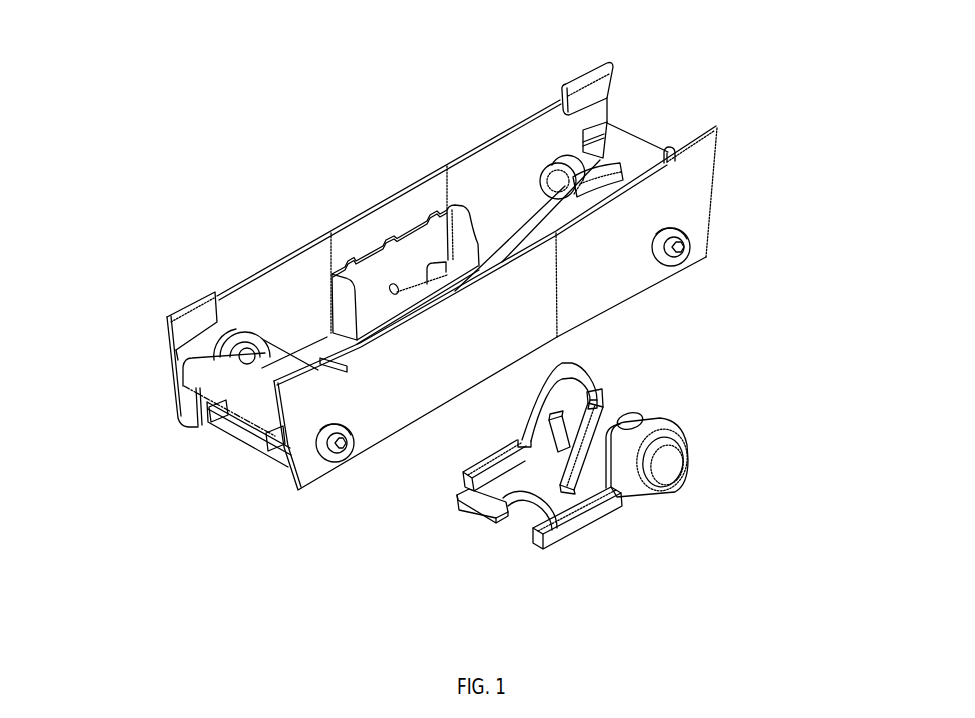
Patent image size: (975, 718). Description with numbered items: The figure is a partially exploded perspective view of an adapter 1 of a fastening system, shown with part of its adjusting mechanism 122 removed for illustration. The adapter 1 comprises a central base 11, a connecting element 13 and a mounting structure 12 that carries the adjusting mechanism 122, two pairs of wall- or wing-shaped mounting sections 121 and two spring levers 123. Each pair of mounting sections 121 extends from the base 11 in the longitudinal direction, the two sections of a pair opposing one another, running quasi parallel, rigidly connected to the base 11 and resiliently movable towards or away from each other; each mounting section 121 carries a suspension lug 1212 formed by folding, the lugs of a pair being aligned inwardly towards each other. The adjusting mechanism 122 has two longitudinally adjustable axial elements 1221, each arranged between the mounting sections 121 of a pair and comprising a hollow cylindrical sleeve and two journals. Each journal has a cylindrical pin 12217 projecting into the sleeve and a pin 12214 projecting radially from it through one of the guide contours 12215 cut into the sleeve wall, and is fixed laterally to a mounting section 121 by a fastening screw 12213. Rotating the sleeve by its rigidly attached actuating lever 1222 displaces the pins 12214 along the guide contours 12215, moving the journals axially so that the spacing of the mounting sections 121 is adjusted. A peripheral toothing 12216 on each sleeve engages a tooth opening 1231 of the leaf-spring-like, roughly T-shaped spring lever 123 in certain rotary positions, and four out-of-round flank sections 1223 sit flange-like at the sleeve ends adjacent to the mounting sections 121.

The adapter 1 is at (122, 303).
The central base 11 is at (340, 208).
The mounting structure 12 is at (495, 127).
The connecting element 13 is at (323, 268).
The mounting sections 121 is at (517, 155).
The adjusting mechanism 122 is at (233, 453).
The spring levers 123 is at (230, 381).
The suspension lug 1212 is at (606, 82).
The axial elements 1221 is at (690, 252).
The actuating lever 1222 is at (575, 505).
The flank sections 1223 is at (567, 377).
The tooth opening 1231 is at (668, 155).
The fastening screw 12213 is at (678, 238).
The pin 12214 is at (577, 165).
The guide contours 12215 is at (627, 430).
The toothing 12216 is at (577, 470).
The cylindrical pin 12217 is at (557, 163).